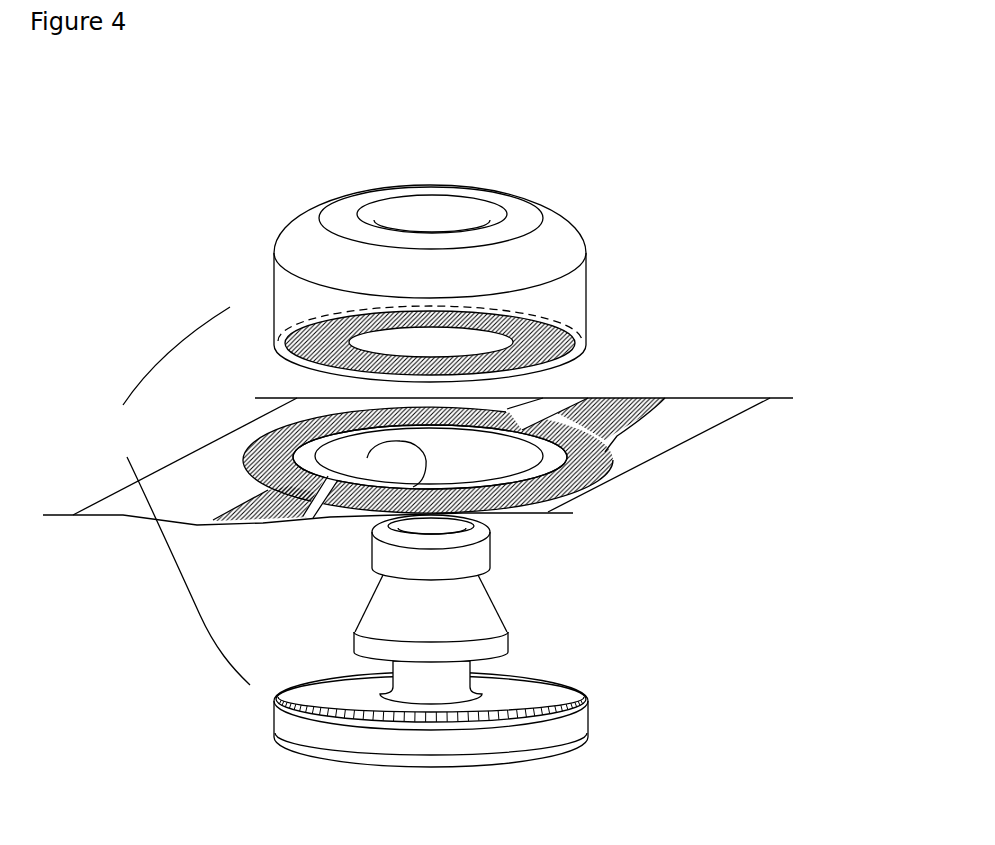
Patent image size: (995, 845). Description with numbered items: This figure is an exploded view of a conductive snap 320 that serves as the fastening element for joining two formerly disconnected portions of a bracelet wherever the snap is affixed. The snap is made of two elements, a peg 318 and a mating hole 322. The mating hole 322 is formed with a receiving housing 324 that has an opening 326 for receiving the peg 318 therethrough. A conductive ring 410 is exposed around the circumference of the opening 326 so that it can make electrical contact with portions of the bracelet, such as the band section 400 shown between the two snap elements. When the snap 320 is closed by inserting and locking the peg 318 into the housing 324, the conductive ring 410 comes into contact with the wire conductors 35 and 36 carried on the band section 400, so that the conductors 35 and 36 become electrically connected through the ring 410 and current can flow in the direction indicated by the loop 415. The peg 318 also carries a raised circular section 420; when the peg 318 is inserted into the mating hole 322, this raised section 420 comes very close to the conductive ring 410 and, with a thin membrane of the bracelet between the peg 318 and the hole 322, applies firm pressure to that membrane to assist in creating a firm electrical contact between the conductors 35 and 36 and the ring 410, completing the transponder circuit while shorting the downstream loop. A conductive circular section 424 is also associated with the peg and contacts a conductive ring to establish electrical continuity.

The conductive snap 320 is at (169, 496).
The mating hole 322 is at (583, 228).
The receiving housing 324 is at (580, 305).
The conductive ring 410 is at (583, 335).
The opening 326 is at (431, 342).
The wire conductor 35 is at (260, 437).
The wire conductor 36 is at (592, 477).
The conductive circular section 424 is at (310, 512).
The band section 400 is at (680, 435).
The loop 415 is at (350, 445).
The raised section 420 is at (580, 687).
The peg 318 is at (508, 598).